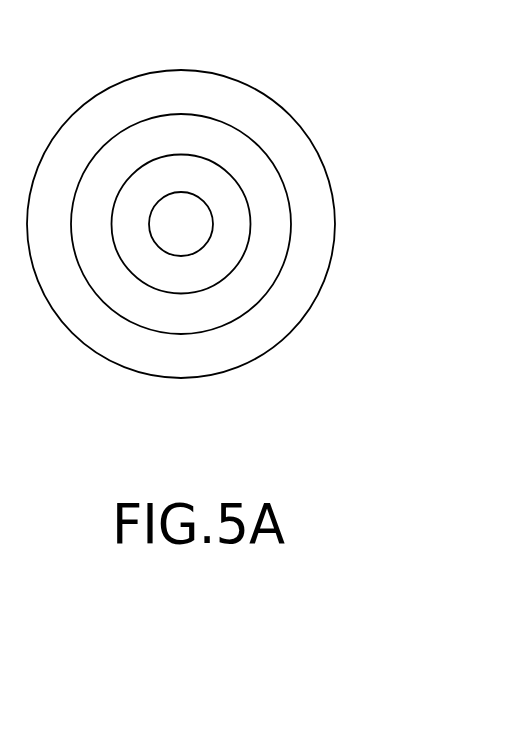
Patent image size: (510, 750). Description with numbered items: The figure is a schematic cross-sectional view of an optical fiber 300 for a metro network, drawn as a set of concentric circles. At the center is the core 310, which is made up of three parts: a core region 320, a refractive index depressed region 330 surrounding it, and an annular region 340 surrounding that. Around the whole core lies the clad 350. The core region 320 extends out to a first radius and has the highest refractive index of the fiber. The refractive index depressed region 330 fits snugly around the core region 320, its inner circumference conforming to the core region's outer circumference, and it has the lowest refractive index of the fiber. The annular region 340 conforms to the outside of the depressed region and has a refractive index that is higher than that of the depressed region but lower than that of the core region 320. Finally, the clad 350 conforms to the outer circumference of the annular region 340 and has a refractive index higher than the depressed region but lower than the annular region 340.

The optical fiber 300 is at (68, 20).
The core 310 is at (253, 140).
The core region 320 is at (202, 226).
The refractive index depressed region 330 is at (218, 185).
The annular region 340 is at (255, 270).
The clad 350 is at (285, 308).